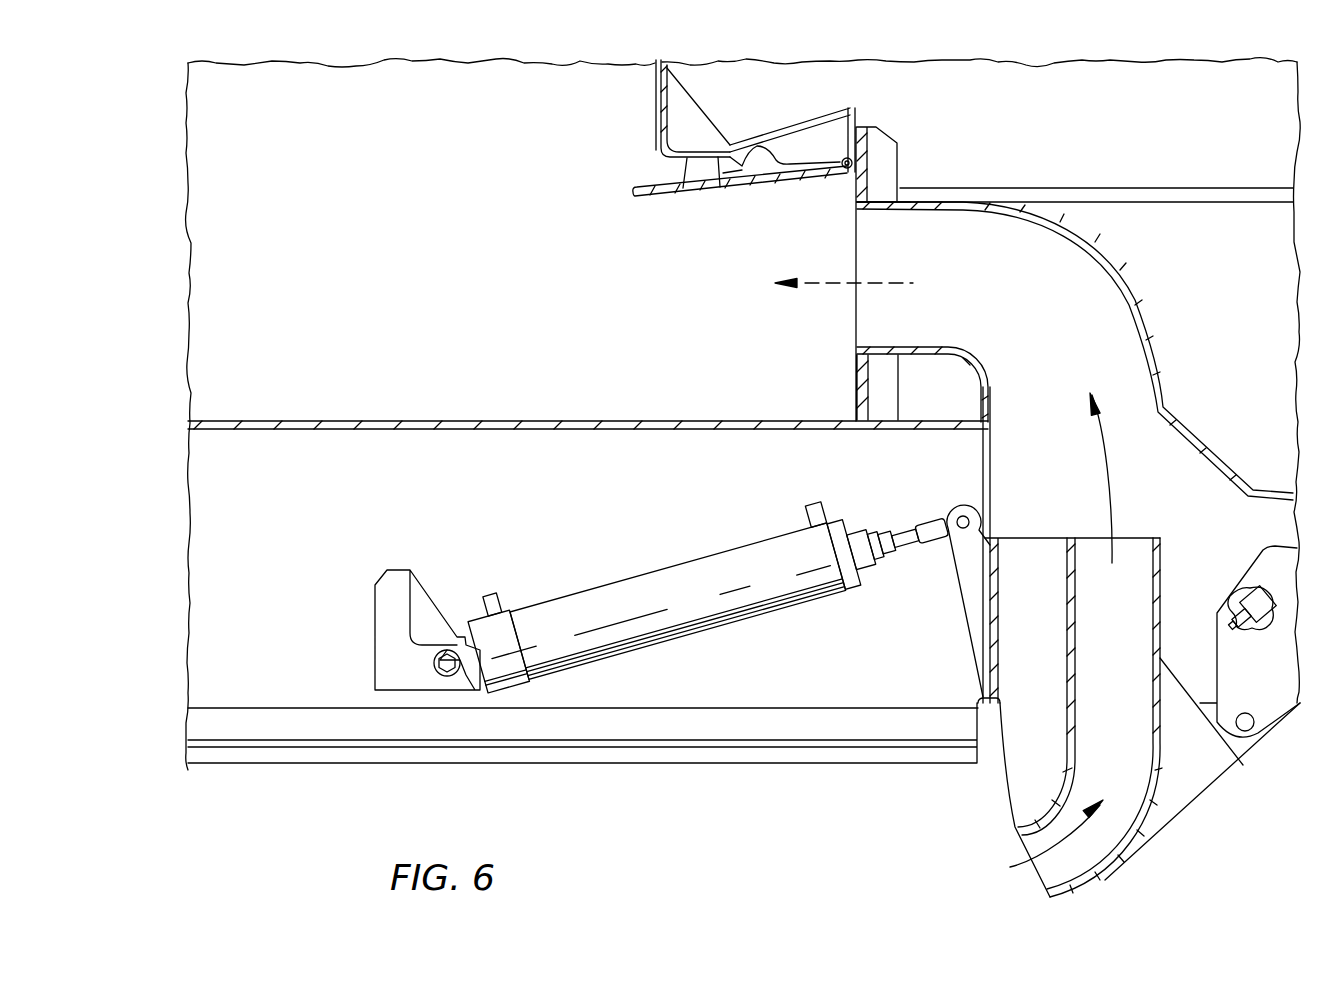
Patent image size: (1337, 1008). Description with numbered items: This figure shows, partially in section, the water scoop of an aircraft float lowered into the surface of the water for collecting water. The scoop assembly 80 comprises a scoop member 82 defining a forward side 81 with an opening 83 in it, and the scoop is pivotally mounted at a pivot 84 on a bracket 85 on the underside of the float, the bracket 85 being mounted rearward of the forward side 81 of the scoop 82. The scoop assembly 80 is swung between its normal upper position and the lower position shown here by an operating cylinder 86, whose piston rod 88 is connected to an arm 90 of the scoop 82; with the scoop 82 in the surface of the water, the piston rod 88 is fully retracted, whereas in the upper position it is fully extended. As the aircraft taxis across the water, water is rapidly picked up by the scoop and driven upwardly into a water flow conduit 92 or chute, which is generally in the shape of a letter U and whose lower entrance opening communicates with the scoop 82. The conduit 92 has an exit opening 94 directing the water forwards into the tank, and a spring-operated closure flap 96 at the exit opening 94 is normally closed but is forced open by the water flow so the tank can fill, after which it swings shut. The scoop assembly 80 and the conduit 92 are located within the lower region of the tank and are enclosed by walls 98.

The scoop assembly 80 is at (985, 806).
The forward side 81 is at (1000, 822).
The scoop member 82 is at (1132, 732).
The opening 83 is at (1030, 883).
The pivot 84 is at (1255, 727).
The bracket 85 is at (1207, 772).
The operating cylinder 86 is at (653, 622).
The piston rod 88 is at (903, 543).
The arm 90 is at (960, 507).
The water flow conduit 92 is at (1123, 277).
The exit opening 94 is at (855, 328).
The closure flap 96 is at (680, 198).
The walls 98 is at (377, 421).